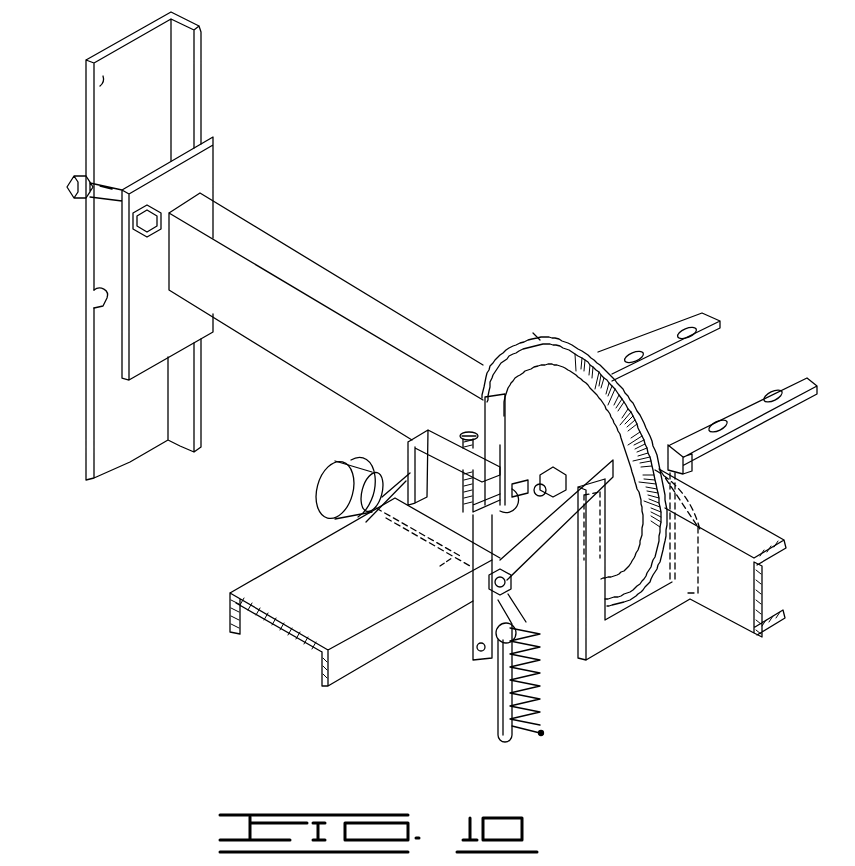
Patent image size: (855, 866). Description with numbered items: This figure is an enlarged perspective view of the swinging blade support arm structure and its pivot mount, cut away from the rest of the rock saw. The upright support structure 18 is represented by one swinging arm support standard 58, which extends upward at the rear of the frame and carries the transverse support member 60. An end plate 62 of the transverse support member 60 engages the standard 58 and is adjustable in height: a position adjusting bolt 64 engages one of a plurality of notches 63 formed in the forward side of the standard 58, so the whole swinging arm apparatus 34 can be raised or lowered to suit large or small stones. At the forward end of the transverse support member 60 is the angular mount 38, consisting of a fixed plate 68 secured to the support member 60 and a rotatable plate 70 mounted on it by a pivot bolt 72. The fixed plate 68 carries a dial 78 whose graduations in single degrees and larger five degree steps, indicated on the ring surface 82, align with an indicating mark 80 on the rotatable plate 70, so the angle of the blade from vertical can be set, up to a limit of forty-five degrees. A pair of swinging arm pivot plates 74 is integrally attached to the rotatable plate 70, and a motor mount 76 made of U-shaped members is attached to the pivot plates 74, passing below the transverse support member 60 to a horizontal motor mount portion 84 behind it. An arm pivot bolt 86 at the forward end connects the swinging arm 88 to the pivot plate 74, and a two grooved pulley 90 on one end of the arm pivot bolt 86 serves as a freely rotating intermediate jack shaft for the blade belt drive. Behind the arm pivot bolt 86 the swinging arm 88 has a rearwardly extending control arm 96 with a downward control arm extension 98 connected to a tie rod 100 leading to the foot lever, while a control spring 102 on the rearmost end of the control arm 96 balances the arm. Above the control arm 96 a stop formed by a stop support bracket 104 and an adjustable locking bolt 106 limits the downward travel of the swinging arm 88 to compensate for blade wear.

The upright support structure 18 is at (216, 48).
The swinging arm support standard 58 is at (100, 86).
The end plate 62 is at (214, 156).
The notch 63 is at (100, 296).
The position adjusting bolt 64 is at (103, 204).
The transverse support member 60 is at (308, 276).
The angular mount 38 is at (535, 337).
The fixed plate 68 is at (517, 352).
The rotatable plate 70 is at (520, 364).
The indicating mark 80 is at (550, 352).
The dial 78 is at (572, 368).
The ring surface 82 is at (636, 425).
The horizontal motor mount portion 84 is at (645, 348).
The motor mount 76 is at (720, 318).
The swinging arm pivot plate 74 is at (480, 403).
The pivot bolt 72 is at (550, 482).
The adjustable locking bolt 106 is at (462, 433).
The stop support bracket 104 is at (407, 458).
The control arm 96 is at (436, 524).
The arm pivot bolt 86 is at (440, 566).
The two grooved pulley 90 is at (320, 495).
The swinging arm apparatus 34 is at (254, 649).
The swinging arm 88 is at (362, 660).
The control arm extension 98 is at (482, 662).
The tie rod 100 is at (502, 720).
The control spring 102 is at (540, 713).